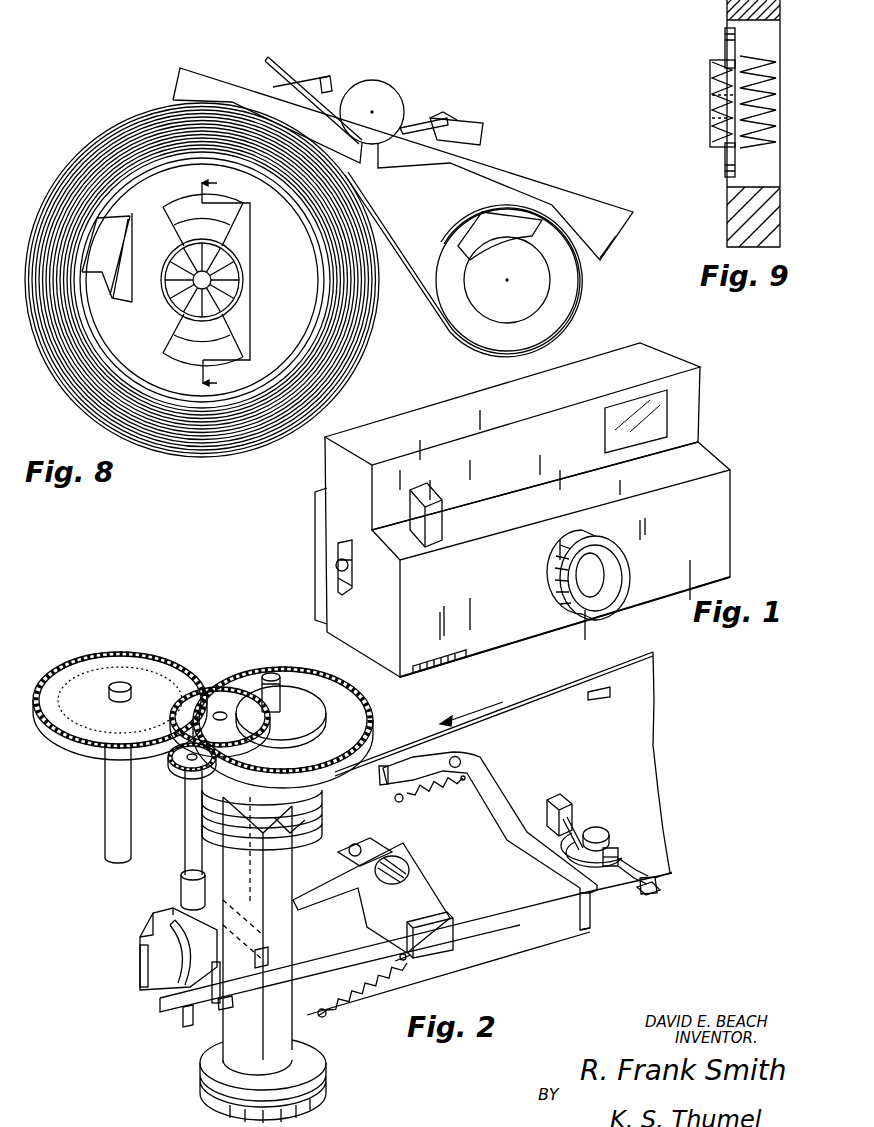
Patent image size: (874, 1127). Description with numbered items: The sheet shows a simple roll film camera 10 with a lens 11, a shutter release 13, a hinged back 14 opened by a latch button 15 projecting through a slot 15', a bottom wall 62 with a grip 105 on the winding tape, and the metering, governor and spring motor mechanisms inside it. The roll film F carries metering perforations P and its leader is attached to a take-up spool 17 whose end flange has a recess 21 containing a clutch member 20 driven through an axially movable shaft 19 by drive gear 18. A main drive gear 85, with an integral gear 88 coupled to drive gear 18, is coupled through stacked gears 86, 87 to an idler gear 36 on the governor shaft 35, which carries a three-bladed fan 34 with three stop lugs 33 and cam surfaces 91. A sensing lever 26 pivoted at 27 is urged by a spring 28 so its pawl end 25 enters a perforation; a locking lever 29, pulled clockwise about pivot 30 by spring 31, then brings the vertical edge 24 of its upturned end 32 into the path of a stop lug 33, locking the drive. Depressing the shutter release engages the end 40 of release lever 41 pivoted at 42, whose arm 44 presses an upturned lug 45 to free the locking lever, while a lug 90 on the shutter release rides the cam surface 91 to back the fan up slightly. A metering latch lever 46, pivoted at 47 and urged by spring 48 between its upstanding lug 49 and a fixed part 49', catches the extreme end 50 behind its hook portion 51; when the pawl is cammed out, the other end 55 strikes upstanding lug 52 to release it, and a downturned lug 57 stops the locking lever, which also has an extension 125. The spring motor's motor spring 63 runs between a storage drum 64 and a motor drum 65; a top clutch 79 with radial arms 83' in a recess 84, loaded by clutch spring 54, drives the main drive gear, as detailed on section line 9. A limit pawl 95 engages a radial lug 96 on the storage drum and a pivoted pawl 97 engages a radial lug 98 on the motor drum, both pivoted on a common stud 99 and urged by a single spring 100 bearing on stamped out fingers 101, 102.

In FIG. 1, the camera 10 is at (710, 462).
In FIG. 1, the lens 11 is at (590, 563).
In FIG. 1, the shutter release 13 is at (430, 500).
In FIG. 1, the hinged back 14 is at (314, 520).
In FIG. 1, the latch button 15 is at (354, 557).
In FIG. 1, the slot 15' is at (359, 593).
In FIG. 1, the bottom wall 62 is at (483, 656).
In FIG. 1, the grip 105 is at (440, 664).
In FIG. 8, the pivoted pawl 97 is at (180, 80).
In FIG. 8, the radial lug 98 is at (122, 196).
In FIG. 8, the common stud 99 is at (373, 93).
In FIG. 8, the spring 100 is at (410, 134).
In FIG. 8, the stamped out finger 101 is at (450, 120).
In FIG. 8, the stamped out finger 102 is at (302, 80).
In FIG. 8, the motor spring 63 is at (402, 260).
In FIG. 8, the storage drum 64 is at (560, 302).
In FIG. 8, the motor drum 65 is at (295, 310).
In FIG. 8, the top clutch 79 is at (230, 277).
In FIG. 9, the top clutch 79 is at (715, 77).
In FIG. 8, the radial arms 83' is at (190, 222).
In FIG. 9, the radial arms 83' is at (704, 104).
In FIG. 8, the recess 84 is at (230, 213).
In FIG. 9, the recess 84 is at (730, 182).
In FIG. 8, the limit pawl 95 is at (598, 243).
In FIG. 8, the radial lug 96 is at (498, 212).
In FIG. 8, the section line 9- 9 is at (217, 283).
In FIG. 9, the clutch spring 54 is at (768, 147).
In FIG. 2, the main drive gear 85 is at (167, 670).
In FIG. 2, the gear 88 is at (95, 683).
In FIG. 2, the stacked gear 86 is at (230, 707).
In FIG. 2, the axially movable shaft 19 is at (280, 692).
In FIG. 2, the stacked gear 87 is at (266, 721).
In FIG. 2, the drive gear 18 is at (360, 702).
In FIG. 2, the idler gear 36 is at (178, 768).
In FIG. 2, the shaft 35 is at (185, 815).
In FIG. 2, the lug 90 is at (200, 853).
In FIG. 2, the clutch member 20 is at (264, 930).
In FIG. 2, the recess 21 is at (317, 813).
In FIG. 2, the take-up spool 17 is at (253, 1050).
In FIG. 2, the locking lever 29 is at (497, 917).
In FIG. 2, the extension 125 is at (160, 1004).
In FIG. 2, the vertical edge 24 is at (224, 1005).
In FIG. 2, the upturned end 32 is at (188, 1023).
In FIG. 2, the three-bladed fan 34 is at (167, 910).
In FIG. 2, the cam surface 91 is at (197, 950).
In FIG. 2, the stop lugs 33 is at (138, 962).
In FIG. 2, the release lever 41 is at (328, 897).
In FIG. 2, the end 40 is at (293, 950).
In FIG. 2, the pivot 42 is at (407, 868).
In FIG. 2, the pivot 30 is at (360, 845).
In FIG. 2, the upturned lug 45 is at (433, 944).
In FIG. 2, the arm 44 is at (404, 960).
In FIG. 2, the spring 31 is at (363, 997).
In FIG. 2, the sensing lever 26 is at (493, 798).
In FIG. 2, the pivot 27 is at (461, 758).
In FIG. 2, the pawl end 25 is at (383, 780).
In FIG. 2, the spring 28 is at (437, 792).
In FIG. 2, the downturned lug 57 is at (583, 927).
In FIG. 2, the end 55 is at (622, 905).
In FIG. 2, the fixed part 49' is at (574, 816).
In FIG. 2, the spring 48 is at (582, 835).
In FIG. 2, the pivot 47 is at (603, 832).
In FIG. 2, the upstanding lug 49 is at (632, 849).
In FIG. 2, the metering latch lever 46 is at (633, 867).
In FIG. 2, the hook portion 51 is at (672, 870).
In FIG. 2, the upstanding lug 52 is at (657, 887).
In FIG. 2, the extreme end 50 is at (640, 893).
In FIG. 2, the roll film F is at (655, 676).
In FIG. 2, the metering perforations P is at (407, 765).